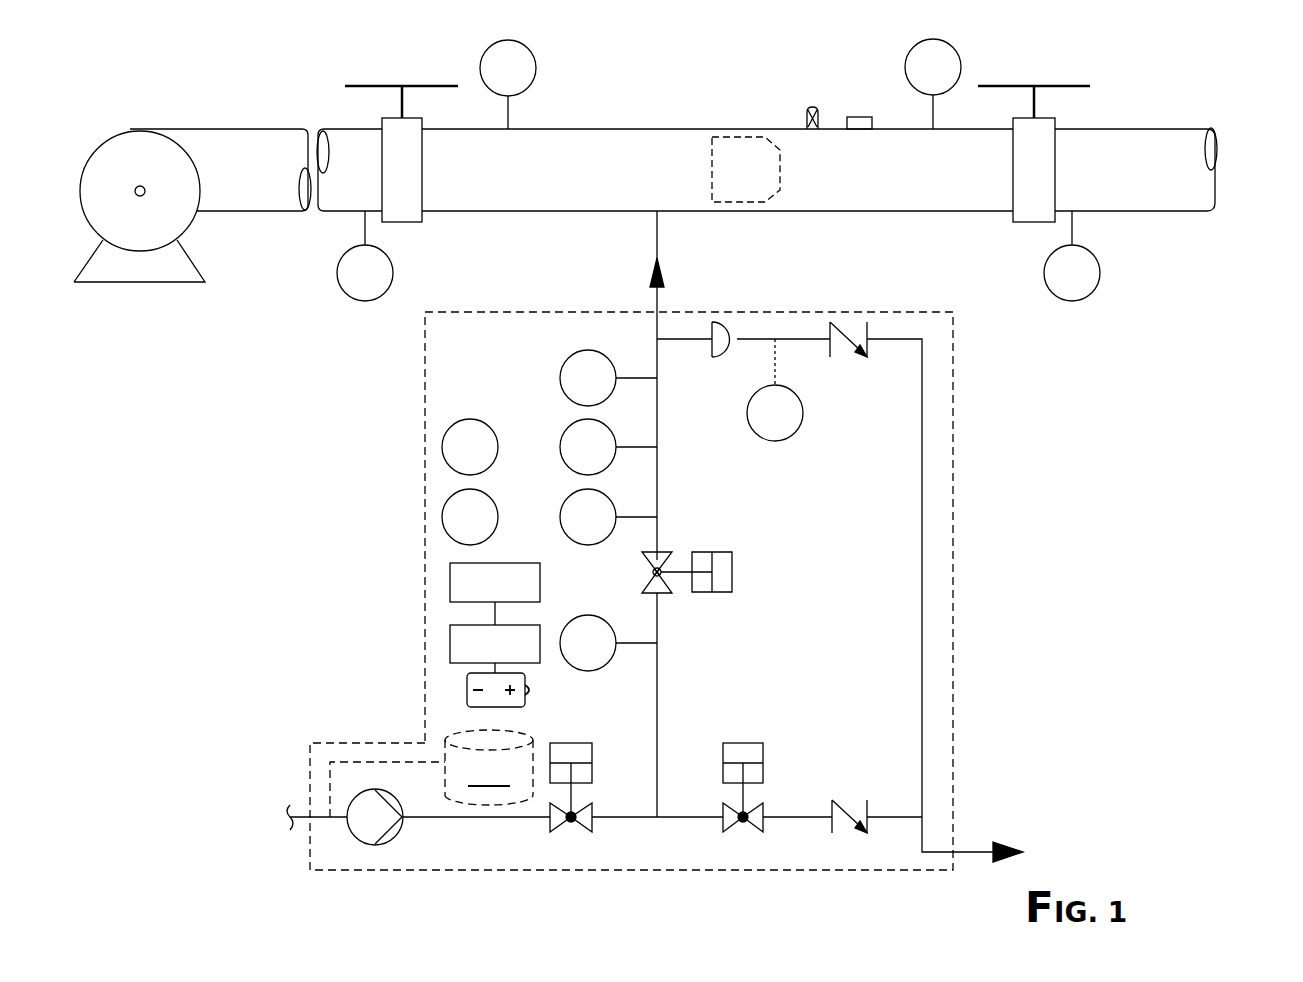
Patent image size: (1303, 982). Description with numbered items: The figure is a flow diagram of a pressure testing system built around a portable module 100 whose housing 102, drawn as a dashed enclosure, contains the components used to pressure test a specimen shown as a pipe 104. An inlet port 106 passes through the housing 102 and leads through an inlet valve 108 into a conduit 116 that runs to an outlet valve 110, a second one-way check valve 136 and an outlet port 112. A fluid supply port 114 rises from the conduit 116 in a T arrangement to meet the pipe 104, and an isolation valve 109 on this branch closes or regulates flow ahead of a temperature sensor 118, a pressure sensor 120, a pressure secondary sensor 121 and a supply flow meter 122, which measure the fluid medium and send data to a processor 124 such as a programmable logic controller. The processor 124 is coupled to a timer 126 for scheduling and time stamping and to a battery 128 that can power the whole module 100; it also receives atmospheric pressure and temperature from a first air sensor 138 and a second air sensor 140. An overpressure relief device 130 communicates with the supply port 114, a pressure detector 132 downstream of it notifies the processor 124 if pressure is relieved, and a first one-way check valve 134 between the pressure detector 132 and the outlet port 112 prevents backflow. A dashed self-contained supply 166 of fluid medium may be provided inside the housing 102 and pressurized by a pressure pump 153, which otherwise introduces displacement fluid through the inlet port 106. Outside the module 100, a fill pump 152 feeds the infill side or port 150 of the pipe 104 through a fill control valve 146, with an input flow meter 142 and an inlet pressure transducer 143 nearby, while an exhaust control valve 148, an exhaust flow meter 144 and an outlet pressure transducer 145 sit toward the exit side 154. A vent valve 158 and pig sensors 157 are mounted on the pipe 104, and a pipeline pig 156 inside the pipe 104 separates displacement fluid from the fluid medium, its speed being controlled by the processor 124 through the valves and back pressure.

The portable module 100 is at (1052, 579).
The housing 102 is at (953, 457).
The pipe 104 is at (575, 128).
The inlet port 106 is at (410, 822).
The inlet valve 108 is at (585, 828).
The isolation valve 109 is at (733, 570).
The outlet valve 110 is at (752, 827).
The outlet port 112 is at (968, 848).
The fluid supply port 114 is at (653, 303).
The conduit 116 is at (657, 723).
The temperature sensor 118 is at (563, 435).
The pressure sensor 120 is at (610, 495).
The pressure secondary sensor 121 is at (572, 353).
The supply flow meter 122 is at (618, 655).
The processor 124 is at (450, 637).
The timer 126 is at (450, 575).
The battery 128 is at (467, 688).
The overpressure relief device 130 is at (732, 330).
The pressure detector 132 is at (803, 418).
The first one-way check valve 134 is at (845, 325).
The second one-way check valve 136 is at (847, 807).
The first air sensor 138 is at (442, 447).
The second air sensor 140 is at (442, 513).
The input flow meter 142 is at (350, 300).
The inlet pressure transducer 143 is at (527, 43).
The exhaust flow meter 144 is at (1073, 302).
The outlet pressure transducer 145 is at (950, 40).
The fill control valve 146 is at (425, 157).
The exhaust control valve 148 is at (1012, 152).
The infill side or port 150 is at (312, 128).
The fill pump 152 is at (108, 138).
The pressure pump 153 is at (352, 835).
The exit side 154 is at (1220, 140).
The pipeline pig 156 is at (710, 167).
The pig sensors 157 is at (853, 117).
The vent valve 158 is at (803, 117).
The self-contained supply 166 is at (489, 767).